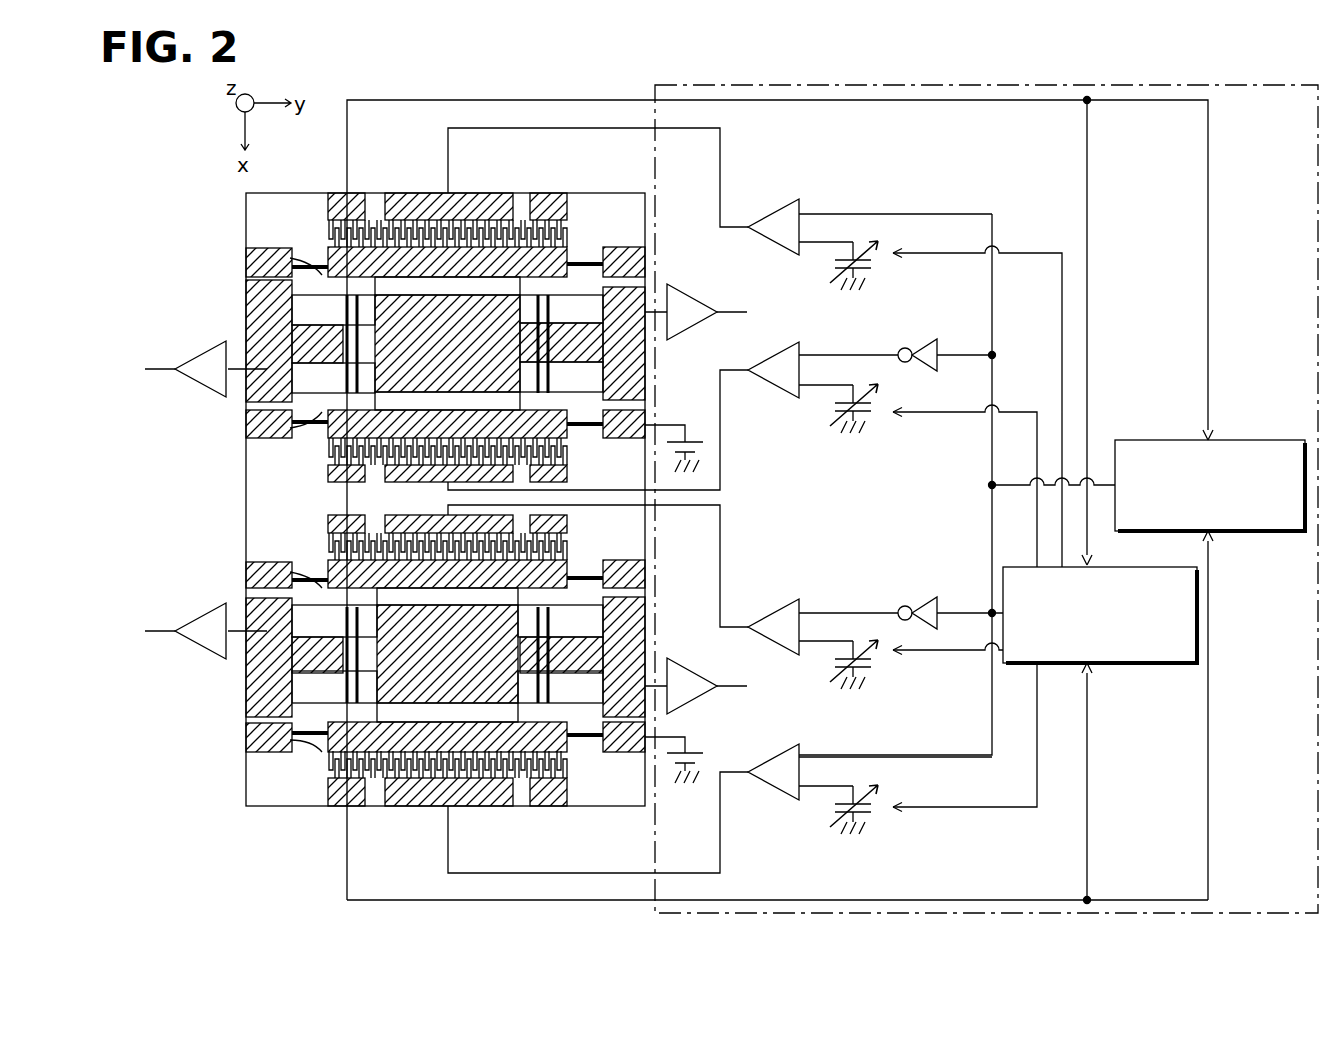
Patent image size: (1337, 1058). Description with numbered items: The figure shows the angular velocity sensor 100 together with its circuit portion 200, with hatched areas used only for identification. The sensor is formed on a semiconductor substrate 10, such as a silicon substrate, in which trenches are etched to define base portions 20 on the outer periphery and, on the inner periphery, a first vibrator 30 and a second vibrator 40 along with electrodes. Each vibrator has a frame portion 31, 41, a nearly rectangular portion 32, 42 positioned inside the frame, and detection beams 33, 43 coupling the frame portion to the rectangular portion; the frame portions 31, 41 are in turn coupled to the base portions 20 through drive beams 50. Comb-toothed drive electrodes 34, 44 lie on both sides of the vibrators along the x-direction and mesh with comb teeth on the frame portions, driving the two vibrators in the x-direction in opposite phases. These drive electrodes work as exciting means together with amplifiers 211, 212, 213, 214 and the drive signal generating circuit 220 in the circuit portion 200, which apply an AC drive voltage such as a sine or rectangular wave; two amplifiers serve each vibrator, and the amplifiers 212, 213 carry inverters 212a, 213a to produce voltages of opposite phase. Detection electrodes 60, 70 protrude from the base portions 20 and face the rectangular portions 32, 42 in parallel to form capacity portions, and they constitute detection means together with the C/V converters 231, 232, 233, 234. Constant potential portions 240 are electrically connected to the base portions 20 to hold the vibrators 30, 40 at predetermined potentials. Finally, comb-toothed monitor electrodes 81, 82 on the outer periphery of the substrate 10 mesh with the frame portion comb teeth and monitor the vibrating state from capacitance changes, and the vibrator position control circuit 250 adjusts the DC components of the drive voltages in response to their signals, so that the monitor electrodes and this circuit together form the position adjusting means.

The angular velocity sensor 100 is at (236, 206).
The semiconductor substrate 10 is at (604, 192).
The base portions 20 is at (246, 262).
The drive beams 50 is at (318, 262).
The second vibrator 40 is at (372, 306).
The detection electrode 70 is at (336, 345).
The detection beam 43 is at (292, 424).
The frame portion 41 is at (378, 262).
The drive electrode 44 is at (428, 193).
The rectangular portion 42 is at (456, 356).
The drive electrode 34 is at (405, 520).
The frame portion 31 is at (328, 566).
The rectangular portion 32 is at (456, 668).
The detection electrode 60 is at (340, 651).
The first vibrator 30 is at (370, 683).
The detection beam 33 is at (345, 716).
The monitor electrode 81 is at (337, 806).
The monitor electrode 82 is at (338, 193).
The circuit portion 200 is at (1176, 82).
The amplifier 214 is at (778, 210).
The amplifier 213 is at (777, 386).
The inverter 213a is at (919, 340).
The amplifier 212 is at (782, 605).
The inverter 212a is at (919, 587).
The amplifier 211 is at (782, 789).
The C/V converter 233 is at (688, 299).
The C/V converter 231 is at (682, 663).
The C/V converter 234 is at (195, 383).
The C/V converter 232 is at (206, 615).
The constant potential portion 240 is at (690, 432).
The drive signal generating circuit 220 is at (1266, 439).
The vibrator position control circuit 250 is at (1132, 664).